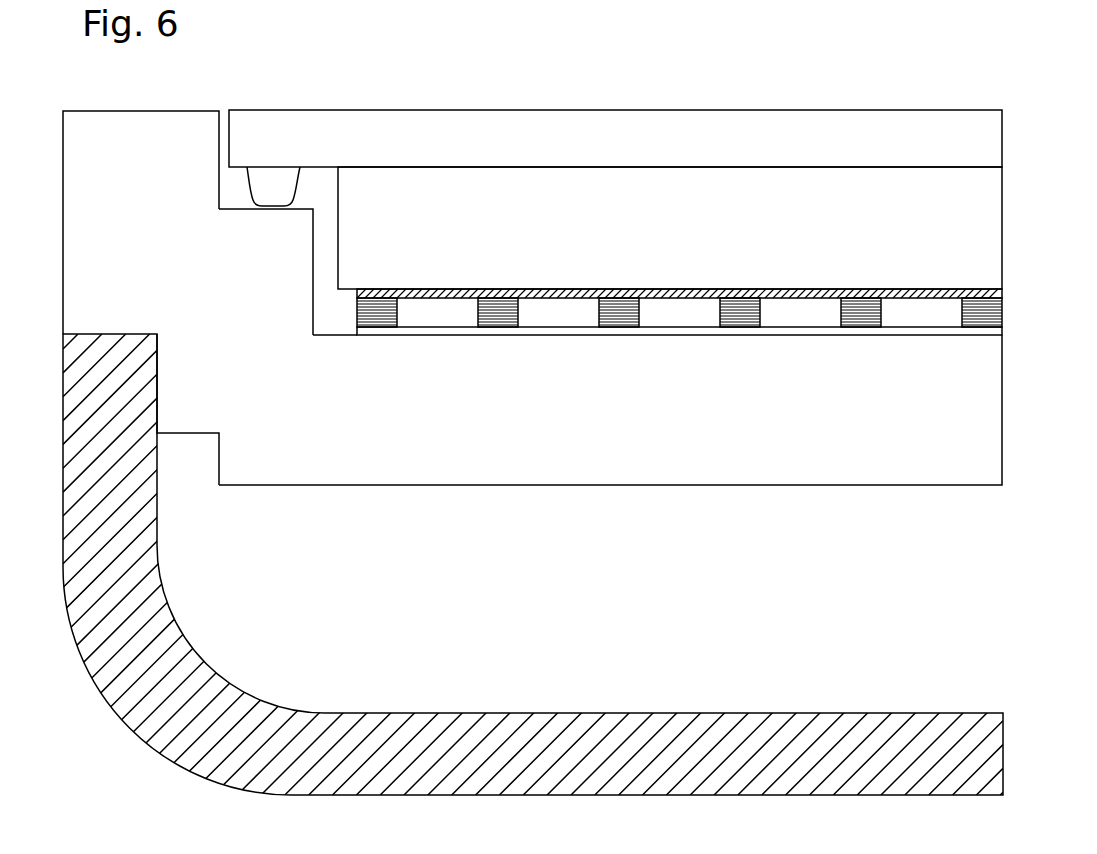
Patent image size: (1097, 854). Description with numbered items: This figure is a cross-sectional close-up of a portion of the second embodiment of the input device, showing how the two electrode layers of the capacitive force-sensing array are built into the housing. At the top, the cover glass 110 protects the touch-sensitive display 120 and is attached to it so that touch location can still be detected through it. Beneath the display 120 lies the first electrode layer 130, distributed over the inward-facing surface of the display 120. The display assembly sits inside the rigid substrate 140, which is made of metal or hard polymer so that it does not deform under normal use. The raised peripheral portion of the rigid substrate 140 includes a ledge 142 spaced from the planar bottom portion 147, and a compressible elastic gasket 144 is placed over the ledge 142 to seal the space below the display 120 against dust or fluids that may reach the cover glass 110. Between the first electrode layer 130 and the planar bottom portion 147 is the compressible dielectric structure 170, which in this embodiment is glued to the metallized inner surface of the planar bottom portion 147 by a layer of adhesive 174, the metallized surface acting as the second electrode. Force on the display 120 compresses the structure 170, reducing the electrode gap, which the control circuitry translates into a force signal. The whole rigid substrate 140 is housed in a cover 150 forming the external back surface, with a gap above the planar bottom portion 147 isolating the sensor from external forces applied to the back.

The cover glass 110 is at (593, 142).
The touch-sensitive display 120 is at (748, 238).
The first electrode layer 130 is at (442, 298).
The rigid substrate 140 is at (282, 442).
The ledge 142 is at (302, 210).
The compressible elastic gasket 144 is at (265, 185).
The planar bottom portion 147 is at (977, 412).
The cover 150 is at (790, 730).
The compressible dielectric structure 170 is at (620, 303).
The layer of adhesive 174 is at (895, 328).